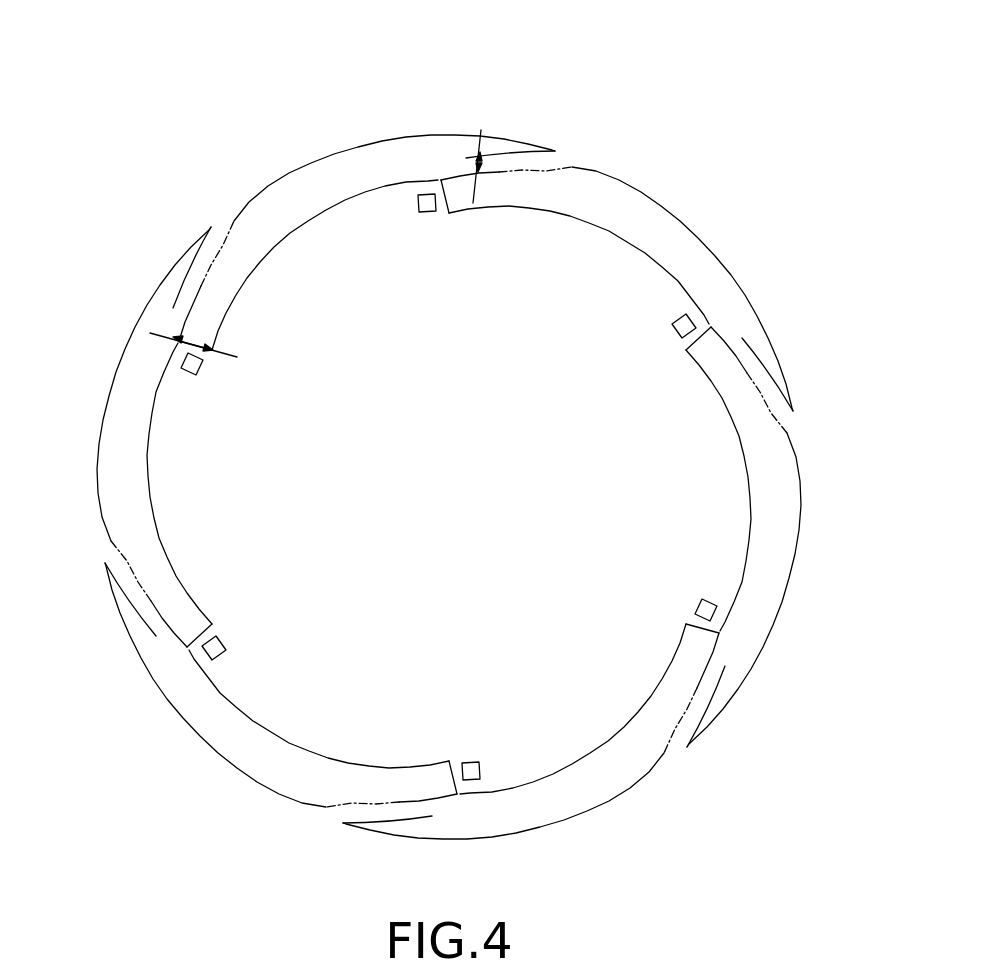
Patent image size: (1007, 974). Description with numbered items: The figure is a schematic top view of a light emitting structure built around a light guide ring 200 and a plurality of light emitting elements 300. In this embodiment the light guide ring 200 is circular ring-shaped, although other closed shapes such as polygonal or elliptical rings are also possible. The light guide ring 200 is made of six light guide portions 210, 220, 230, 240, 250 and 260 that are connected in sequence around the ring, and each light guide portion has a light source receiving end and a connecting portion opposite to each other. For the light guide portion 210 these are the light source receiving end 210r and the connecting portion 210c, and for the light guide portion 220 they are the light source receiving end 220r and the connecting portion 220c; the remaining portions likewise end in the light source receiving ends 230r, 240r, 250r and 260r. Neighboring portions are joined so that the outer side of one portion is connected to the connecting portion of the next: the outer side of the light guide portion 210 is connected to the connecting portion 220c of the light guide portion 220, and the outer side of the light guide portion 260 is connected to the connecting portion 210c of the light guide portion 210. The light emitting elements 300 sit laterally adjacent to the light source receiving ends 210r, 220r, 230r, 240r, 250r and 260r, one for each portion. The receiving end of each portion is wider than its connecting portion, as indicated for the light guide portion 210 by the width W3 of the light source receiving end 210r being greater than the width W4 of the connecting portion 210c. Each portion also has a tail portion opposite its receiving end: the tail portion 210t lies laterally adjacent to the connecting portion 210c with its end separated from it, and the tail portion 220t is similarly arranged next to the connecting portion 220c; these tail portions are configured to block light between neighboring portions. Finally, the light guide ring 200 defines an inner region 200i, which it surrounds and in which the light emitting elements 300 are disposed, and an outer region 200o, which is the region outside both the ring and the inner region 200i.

The light guide ring 200 is at (119, 3).
The outer region 200o is at (735, 100).
The inner region 200i is at (482, 501).
The light guide portion 210 is at (401, 232).
The light guide portion 220 is at (173, 437).
The light guide portion 230 is at (292, 694).
The light guide portion 240 is at (531, 728).
The light guide portion 250 is at (735, 537).
The light guide portion 260 is at (590, 289).
The tail portion 210t is at (507, 146).
The connecting portion 210c is at (530, 160).
The light source receiving end 210r is at (206, 352).
The tail portion 220t is at (177, 272).
The connecting portion 220c is at (203, 272).
The light source receiving end 220r is at (217, 626).
The light source receiving end 230r is at (450, 758).
The light source receiving end 240r is at (688, 622).
The light source receiving end 250r is at (683, 349).
The light source receiving end 260r is at (444, 215).
The light emitting element 300 is at (434, 208).
The width of the light source receiving end W3 is at (193, 342).
The width of the connecting portion W4 is at (478, 152).